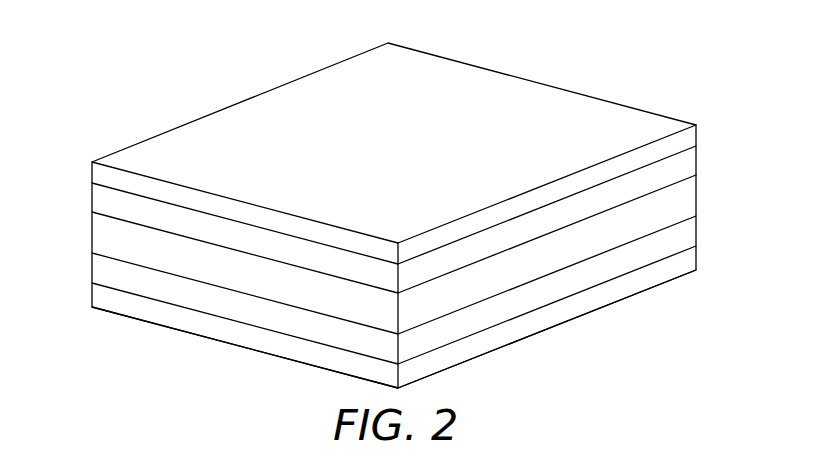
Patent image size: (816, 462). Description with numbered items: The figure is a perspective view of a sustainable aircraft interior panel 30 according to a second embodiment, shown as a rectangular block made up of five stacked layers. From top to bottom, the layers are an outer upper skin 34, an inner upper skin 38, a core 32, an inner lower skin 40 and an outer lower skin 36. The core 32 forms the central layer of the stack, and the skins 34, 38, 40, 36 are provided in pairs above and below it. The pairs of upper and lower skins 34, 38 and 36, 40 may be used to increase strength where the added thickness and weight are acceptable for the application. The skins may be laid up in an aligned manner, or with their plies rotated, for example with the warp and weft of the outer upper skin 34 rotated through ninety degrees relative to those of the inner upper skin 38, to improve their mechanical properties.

The sustainable aircraft interior panel 30 is at (93, 131).
The outer upper skin 34 is at (688, 134).
The inner upper skin 38 is at (688, 163).
The core 32 is at (688, 197).
The inner lower skin 40 is at (688, 230).
The outer lower skin 36 is at (688, 257).